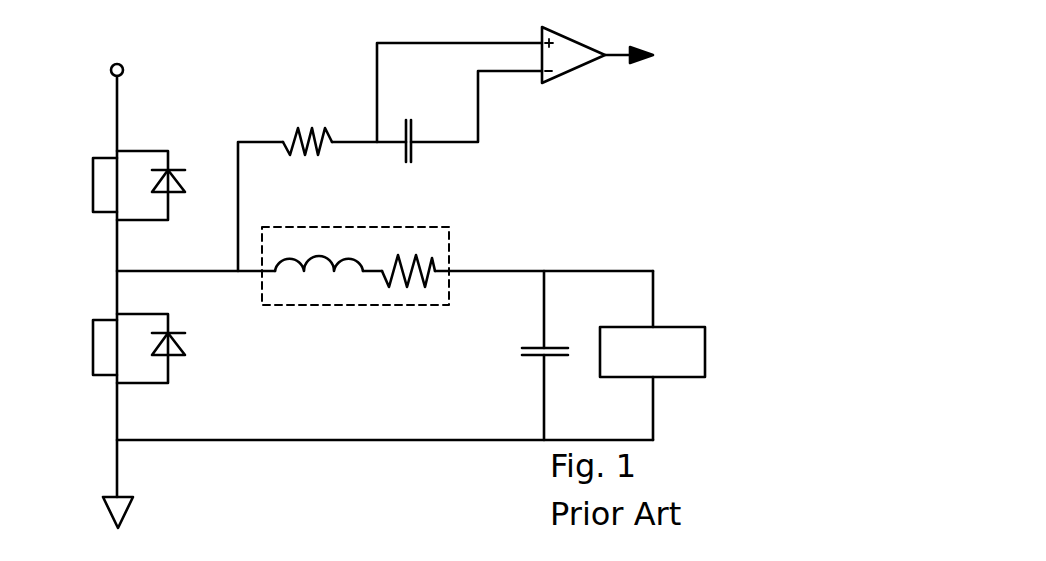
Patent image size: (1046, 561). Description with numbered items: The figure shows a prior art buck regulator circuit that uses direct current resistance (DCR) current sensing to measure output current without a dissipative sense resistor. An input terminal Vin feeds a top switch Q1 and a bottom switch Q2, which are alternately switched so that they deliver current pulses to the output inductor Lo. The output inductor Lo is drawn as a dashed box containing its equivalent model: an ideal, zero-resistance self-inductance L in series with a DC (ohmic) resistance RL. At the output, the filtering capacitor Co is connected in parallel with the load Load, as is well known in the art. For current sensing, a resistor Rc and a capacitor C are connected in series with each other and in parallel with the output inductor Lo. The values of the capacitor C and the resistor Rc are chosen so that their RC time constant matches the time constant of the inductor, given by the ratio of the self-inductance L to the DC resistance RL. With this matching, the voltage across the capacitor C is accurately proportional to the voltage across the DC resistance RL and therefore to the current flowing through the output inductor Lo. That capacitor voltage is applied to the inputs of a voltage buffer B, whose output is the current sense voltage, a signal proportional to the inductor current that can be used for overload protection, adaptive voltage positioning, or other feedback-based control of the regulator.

The input voltage terminal Vin is at (142, 276).
The top switch Q1 is at (139, 185).
The bottom switch Q2 is at (139, 348).
The resistor Rc is at (309, 128).
The capacitor C is at (406, 120).
The voltage buffer B is at (575, 68).
The output inductor Lo is at (345, 307).
The self-inductance L is at (316, 256).
The DC resistance RL is at (408, 257).
The output filtering capacitor Co is at (523, 348).
The load Load is at (652, 355).